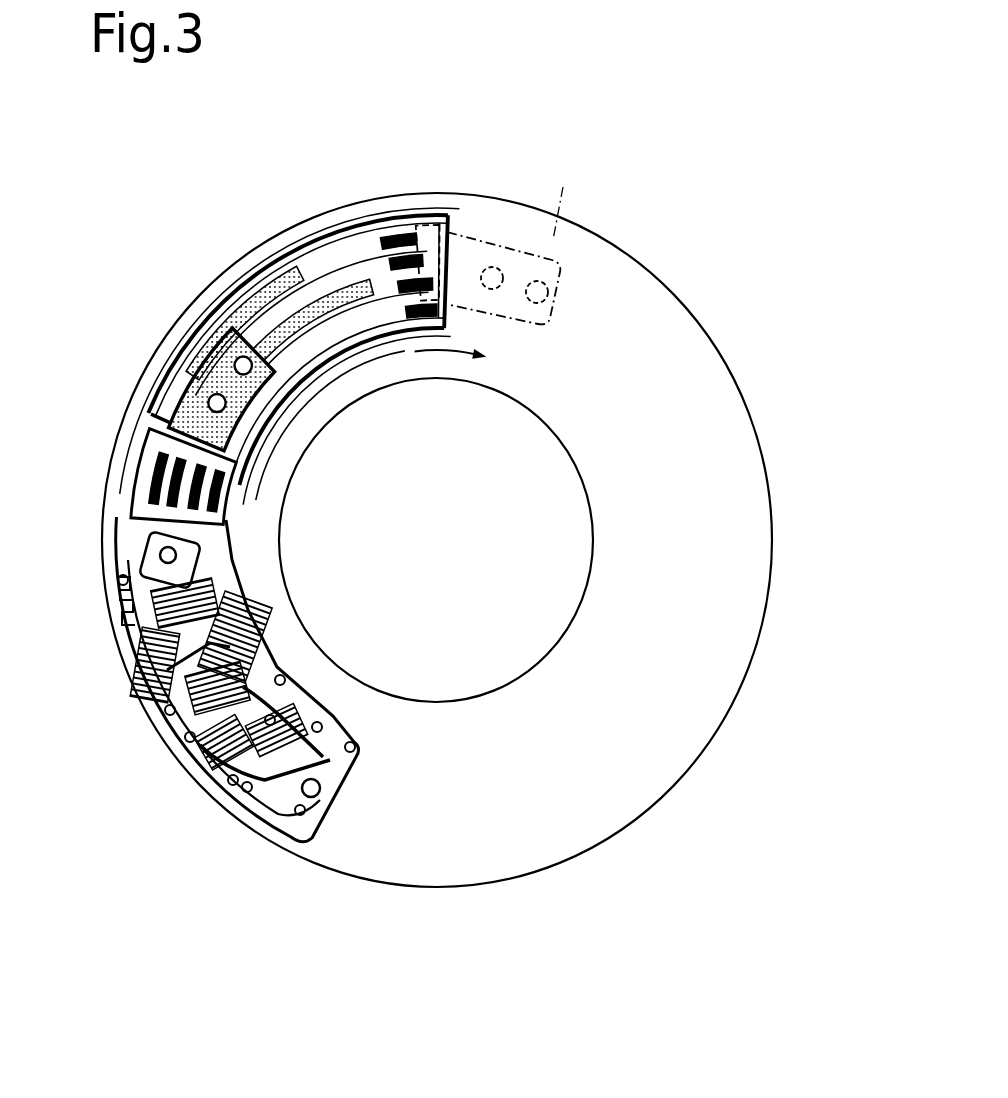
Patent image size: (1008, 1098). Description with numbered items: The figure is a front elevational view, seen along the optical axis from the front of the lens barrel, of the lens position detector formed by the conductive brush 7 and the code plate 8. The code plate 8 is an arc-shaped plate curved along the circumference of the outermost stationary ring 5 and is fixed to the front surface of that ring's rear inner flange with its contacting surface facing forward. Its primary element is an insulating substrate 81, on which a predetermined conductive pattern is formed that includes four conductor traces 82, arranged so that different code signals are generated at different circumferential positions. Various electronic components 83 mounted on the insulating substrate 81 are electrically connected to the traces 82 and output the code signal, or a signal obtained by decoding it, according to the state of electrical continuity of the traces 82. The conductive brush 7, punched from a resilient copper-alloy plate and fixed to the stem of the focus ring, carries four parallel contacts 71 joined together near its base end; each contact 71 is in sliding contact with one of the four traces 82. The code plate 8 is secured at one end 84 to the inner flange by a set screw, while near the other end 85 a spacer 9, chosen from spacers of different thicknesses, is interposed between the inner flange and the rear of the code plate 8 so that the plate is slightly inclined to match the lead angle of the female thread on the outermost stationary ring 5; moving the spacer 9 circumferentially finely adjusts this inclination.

The outermost stationary ring 5 is at (738, 390).
The conductive brush 7 is at (157, 420).
The code plate 8 is at (220, 300).
The spacer 9 is at (413, 213).
The contacts 71 is at (165, 553).
The insulating substrate 81 is at (250, 447).
The traces 82 is at (289, 287).
The electronic components 83 is at (153, 713).
The one end 84 is at (311, 800).
The other end 85 is at (450, 222).